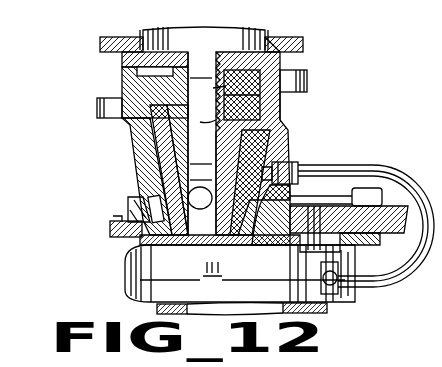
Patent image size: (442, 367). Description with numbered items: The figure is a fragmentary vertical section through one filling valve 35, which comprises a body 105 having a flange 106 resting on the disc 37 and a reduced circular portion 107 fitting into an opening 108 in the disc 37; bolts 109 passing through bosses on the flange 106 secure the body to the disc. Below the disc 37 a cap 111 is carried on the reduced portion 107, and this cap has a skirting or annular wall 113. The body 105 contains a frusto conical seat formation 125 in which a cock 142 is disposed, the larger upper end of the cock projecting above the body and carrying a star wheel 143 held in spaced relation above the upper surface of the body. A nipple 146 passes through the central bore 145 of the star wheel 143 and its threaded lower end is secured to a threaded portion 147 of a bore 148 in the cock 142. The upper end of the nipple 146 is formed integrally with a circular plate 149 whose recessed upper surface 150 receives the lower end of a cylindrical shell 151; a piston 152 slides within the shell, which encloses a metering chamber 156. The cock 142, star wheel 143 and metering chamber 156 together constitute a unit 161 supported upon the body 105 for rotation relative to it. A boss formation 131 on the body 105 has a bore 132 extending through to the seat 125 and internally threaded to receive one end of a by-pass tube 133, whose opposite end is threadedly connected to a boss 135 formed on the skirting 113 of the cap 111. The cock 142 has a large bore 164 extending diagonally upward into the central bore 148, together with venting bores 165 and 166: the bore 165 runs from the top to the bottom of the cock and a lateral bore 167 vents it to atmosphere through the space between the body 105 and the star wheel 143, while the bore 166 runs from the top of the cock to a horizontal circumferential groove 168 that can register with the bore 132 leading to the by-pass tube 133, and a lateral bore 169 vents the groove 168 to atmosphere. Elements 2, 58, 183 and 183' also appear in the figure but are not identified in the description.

The housing 2 is at (113, 222).
The filling valve 35 is at (132, 173).
The disc 37 is at (110, 230).
The base 58 is at (297, 310).
The body 105 is at (253, 198).
The flange 106 is at (135, 213).
The reduced circular portion 107 is at (360, 235).
The opening 108 is at (340, 242).
The bolts 109 is at (372, 190).
The cap 111 is at (212, 269).
The skirting 113 is at (138, 265).
The frusto conical seat formation 125 is at (268, 142).
The boss formation 131 is at (258, 165).
The bore 132 is at (272, 170).
The by-pass tube 133 is at (386, 272).
The boss 135 is at (320, 278).
The cock 142 is at (153, 143).
The star wheel 143 is at (283, 82).
The central bore 145 is at (208, 90).
The nipple 146 is at (217, 70).
The threaded portion 147 is at (203, 116).
The bore 148 is at (216, 158).
The circular plate 149 is at (266, 43).
The recessed upper surface 150 is at (100, 39).
The cylindrical shell 151 is at (282, 44).
The piston 152 is at (217, 56).
The metering chamber 156 is at (219, 31).
The unit 161 is at (110, 58).
The large bore 164 is at (209, 205).
The venting bore 165 is at (168, 152).
The venting bore 166 is at (244, 113).
The lateral bore 167 is at (132, 90).
The horizontal groove 168 is at (235, 173).
The lateral bore 169 is at (258, 108).
The pin 183 is at (210, 84).
The pin 183' is at (342, 105).